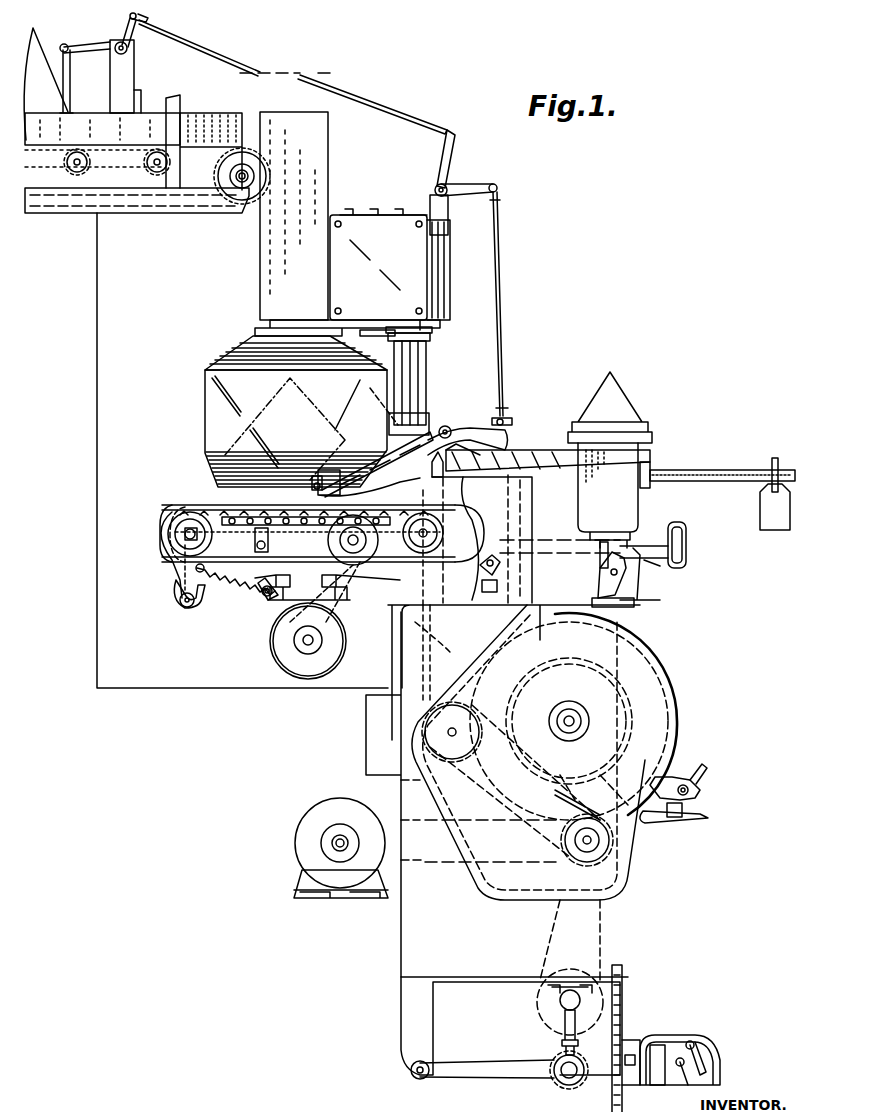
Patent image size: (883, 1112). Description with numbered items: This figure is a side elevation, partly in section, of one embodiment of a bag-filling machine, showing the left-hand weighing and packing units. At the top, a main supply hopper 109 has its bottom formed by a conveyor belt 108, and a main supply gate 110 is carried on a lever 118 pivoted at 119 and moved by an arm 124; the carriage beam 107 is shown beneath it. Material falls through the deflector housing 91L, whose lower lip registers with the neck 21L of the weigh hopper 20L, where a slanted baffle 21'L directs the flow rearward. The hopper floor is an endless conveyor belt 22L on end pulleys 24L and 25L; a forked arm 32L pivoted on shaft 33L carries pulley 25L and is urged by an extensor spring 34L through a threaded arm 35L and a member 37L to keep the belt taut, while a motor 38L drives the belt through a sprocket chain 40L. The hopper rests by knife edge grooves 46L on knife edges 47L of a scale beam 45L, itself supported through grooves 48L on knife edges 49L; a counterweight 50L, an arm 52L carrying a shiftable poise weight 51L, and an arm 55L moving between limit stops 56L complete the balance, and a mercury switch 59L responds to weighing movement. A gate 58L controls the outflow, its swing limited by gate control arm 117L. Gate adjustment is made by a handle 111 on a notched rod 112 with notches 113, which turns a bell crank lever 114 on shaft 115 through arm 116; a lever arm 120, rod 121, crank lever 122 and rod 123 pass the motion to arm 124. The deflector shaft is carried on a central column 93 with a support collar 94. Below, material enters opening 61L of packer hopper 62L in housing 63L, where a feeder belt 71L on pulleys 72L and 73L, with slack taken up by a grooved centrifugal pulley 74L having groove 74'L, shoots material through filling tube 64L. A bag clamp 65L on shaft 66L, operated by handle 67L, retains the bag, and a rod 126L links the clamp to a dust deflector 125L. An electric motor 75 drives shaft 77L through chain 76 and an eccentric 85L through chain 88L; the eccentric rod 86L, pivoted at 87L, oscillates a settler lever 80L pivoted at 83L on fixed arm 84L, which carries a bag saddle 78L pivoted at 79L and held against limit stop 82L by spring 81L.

The main supply hopper 109 is at (38, 50).
The arm 124 is at (126, 19).
The rod 123 is at (240, 66).
The lever 118 is at (101, 47).
The pivot 119 is at (132, 50).
The main supply gate 110 is at (70, 101).
The carriage beam 107 is at (143, 139).
The conveyor belt 108 is at (217, 159).
The housing 91L is at (268, 300).
The crank lever 122 is at (458, 166).
The rod 121 is at (505, 292).
The lever arm 120 is at (504, 417).
The neck portion 21L is at (253, 336).
The weigh hopper 20L is at (311, 425).
The baffle 21'L is at (285, 427).
The support collar 94 is at (432, 353).
The central supporting column 93 is at (428, 385).
The gate control arm 117L is at (384, 402).
The shaft 115 is at (445, 425).
The bell crank lever 114 is at (458, 428).
The scale hopper gate 58L is at (383, 462).
The knife edges 47L is at (318, 492).
The knife edge grooves 46L is at (314, 472).
The scale beam 45L is at (540, 449).
The grooves 48L is at (480, 455).
The counterweight 50L is at (637, 505).
The arm 52L is at (679, 470).
The poise weight 51L is at (760, 512).
The handle 111 is at (686, 548).
The rod 112 is at (545, 542).
The adjustment notches 113 is at (640, 556).
The arm 55L is at (600, 568).
The limit stops 56L is at (600, 588).
The conveyor belt 22L is at (168, 516).
The end pulley 25L is at (168, 537).
The forked arm 32L is at (200, 542).
The end pulley 24L is at (430, 530).
The adjustable threaded arm 35L is at (178, 580).
The shaft 33L is at (178, 606).
The extensor spring 34L is at (210, 588).
The member 37L is at (262, 598).
The sprocket chain 40L is at (325, 636).
The motor 38L is at (271, 642).
The knife edges 49L is at (460, 480).
The arm 116 is at (462, 502).
The mercury switch 59L is at (497, 567).
The opening 61L is at (473, 606).
The packer hopper 62L is at (500, 641).
The centrifugal pulley 74L is at (607, 702).
The groove 74'L is at (613, 718).
The rod 126L is at (610, 770).
The dust deflector 125L is at (565, 790).
The conveyor belt 71L is at (490, 800).
The pulley 72L is at (446, 743).
The pulley 73L is at (570, 854).
The shaft 77L is at (575, 840).
The packer housing 63L is at (401, 802).
The chain or belt 76 is at (422, 867).
The electric motor 75 is at (300, 835).
The handle 67L is at (707, 777).
The shaft 66L is at (700, 793).
The bag clamp 65L is at (690, 812).
The valve bag filling tube 64L is at (658, 826).
The chain or belt 88L is at (604, 937).
The fixed arm 84L is at (410, 1014).
The eccentric 85L is at (560, 1000).
The eccentric rod 86L is at (560, 1027).
The pivot 87L is at (567, 1088).
The settler lever 80L is at (472, 1063).
The pivot 83L is at (424, 1080).
The limit stop 82L is at (651, 1060).
The bag saddle 78L is at (715, 1060).
The spring 81L is at (691, 1041).
The pivot 79L is at (678, 1068).